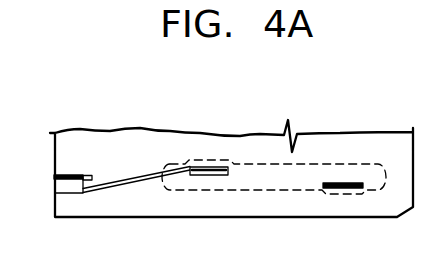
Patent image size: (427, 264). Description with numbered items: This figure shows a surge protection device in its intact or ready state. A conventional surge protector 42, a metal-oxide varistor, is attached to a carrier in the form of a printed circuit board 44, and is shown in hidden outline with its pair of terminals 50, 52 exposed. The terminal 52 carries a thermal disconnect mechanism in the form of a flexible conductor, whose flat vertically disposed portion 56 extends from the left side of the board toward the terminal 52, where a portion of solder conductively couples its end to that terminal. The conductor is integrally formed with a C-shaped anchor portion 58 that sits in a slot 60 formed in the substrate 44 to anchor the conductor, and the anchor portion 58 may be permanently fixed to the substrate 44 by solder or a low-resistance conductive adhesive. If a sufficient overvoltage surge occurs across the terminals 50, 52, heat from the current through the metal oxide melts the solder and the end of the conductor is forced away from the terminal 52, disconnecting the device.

The surge protector 42 is at (257, 190).
The printed circuit board 44 is at (102, 132).
The terminal 50 is at (340, 183).
The terminal 52 is at (203, 167).
The flat vertically disposed portion 56 is at (128, 187).
The C-shaped anchor portion 58 is at (58, 182).
The slot 60 is at (88, 175).